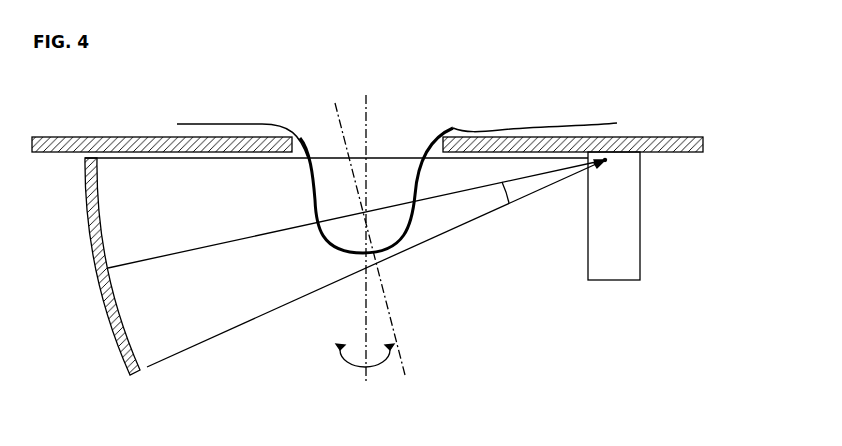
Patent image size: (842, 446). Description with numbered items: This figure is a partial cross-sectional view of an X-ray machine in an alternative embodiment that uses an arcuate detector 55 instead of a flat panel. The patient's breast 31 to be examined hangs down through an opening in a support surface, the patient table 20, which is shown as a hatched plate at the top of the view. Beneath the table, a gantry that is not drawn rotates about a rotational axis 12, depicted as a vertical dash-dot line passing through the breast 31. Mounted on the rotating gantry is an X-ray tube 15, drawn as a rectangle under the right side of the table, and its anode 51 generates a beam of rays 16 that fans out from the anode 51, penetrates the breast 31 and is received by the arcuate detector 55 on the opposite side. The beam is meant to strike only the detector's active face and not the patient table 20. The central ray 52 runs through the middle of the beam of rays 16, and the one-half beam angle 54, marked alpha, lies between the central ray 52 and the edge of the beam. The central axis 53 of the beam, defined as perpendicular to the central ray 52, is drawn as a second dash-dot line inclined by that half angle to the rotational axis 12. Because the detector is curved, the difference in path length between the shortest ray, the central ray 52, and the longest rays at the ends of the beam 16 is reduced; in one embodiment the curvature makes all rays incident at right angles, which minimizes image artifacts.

The rotational axis 12 is at (367, 107).
The X-ray tube 15 is at (640, 263).
The beam of rays 16 is at (218, 338).
The patient table 20 is at (43, 150).
The breast 31 is at (392, 230).
The anode 51 is at (610, 158).
The central ray 52 is at (228, 245).
The central axis 53 is at (408, 370).
The one-half beam angle 54 is at (500, 207).
The arcuate detector 55 is at (122, 322).